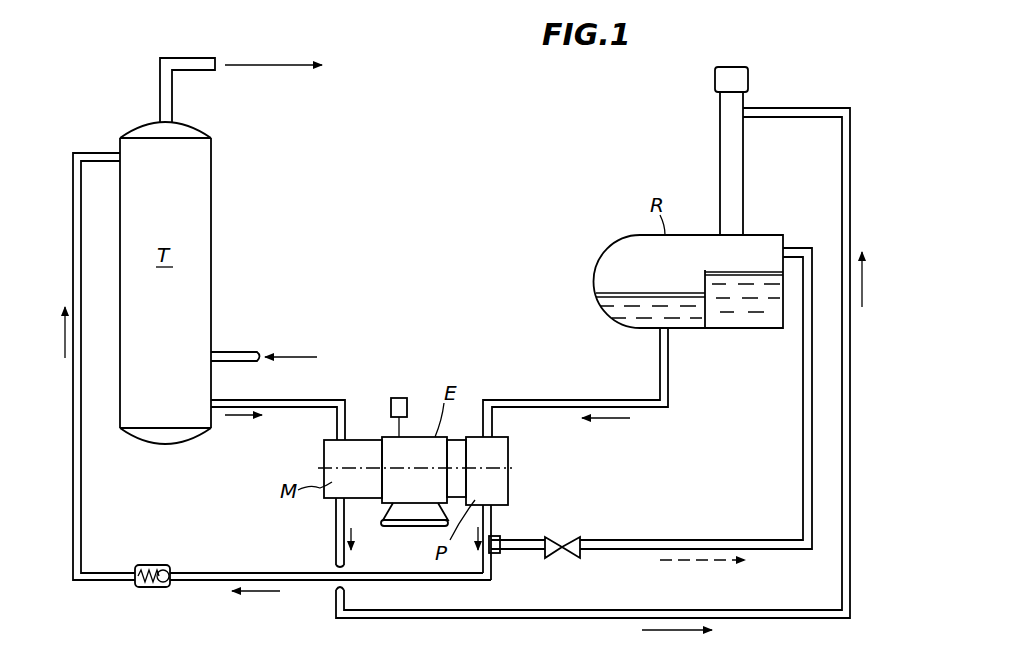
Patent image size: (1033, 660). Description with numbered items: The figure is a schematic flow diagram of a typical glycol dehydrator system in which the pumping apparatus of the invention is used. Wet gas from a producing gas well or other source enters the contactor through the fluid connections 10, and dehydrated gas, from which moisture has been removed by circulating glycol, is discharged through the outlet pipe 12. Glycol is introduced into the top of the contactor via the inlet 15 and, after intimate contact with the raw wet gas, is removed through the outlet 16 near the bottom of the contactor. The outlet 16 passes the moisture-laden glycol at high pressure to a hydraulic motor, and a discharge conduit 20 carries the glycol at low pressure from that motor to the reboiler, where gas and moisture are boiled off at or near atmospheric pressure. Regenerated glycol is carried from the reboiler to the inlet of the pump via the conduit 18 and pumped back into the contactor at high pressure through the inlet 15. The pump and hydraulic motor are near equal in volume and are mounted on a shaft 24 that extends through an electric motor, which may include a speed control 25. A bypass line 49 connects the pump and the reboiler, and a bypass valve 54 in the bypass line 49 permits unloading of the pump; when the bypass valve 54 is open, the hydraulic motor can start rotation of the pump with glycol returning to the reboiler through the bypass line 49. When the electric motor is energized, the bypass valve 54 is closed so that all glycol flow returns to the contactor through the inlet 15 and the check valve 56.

The fluid connections 10 is at (235, 350).
The outlet pipe 12 is at (200, 70).
The inlet 15 is at (73, 152).
The outlet 16 is at (296, 408).
The conduit 18 is at (542, 398).
The discharge conduit 20 is at (336, 537).
The shaft 24 is at (512, 467).
The speed control 25 is at (399, 398).
The bypass line 49 is at (638, 551).
The bypass valve 54 is at (578, 540).
The check valve 56 is at (157, 590).